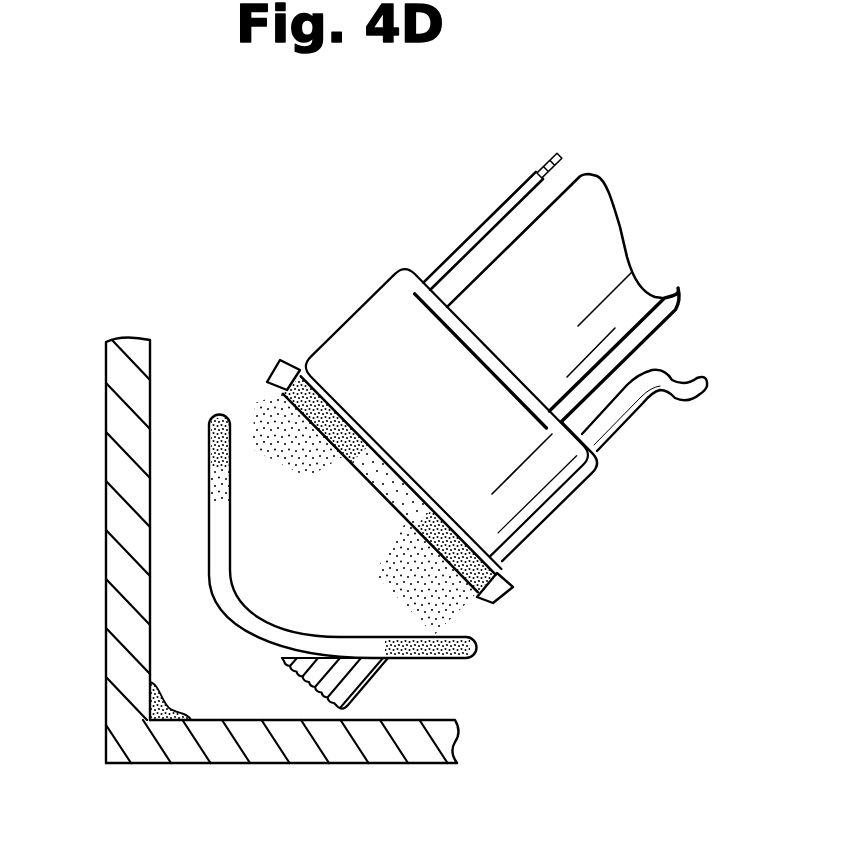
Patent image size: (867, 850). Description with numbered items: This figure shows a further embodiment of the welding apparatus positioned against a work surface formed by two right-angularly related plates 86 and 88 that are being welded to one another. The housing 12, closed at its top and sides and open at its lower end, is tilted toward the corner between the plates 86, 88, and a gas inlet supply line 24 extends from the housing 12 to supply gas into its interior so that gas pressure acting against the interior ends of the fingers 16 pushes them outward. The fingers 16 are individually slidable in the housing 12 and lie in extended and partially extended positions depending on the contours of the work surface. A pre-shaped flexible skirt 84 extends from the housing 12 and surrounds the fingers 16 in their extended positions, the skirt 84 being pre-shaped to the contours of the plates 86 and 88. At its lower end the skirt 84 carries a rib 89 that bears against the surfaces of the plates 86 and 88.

The housing 12 is at (517, 487).
The fingers 16 is at (362, 677).
The gas inlet supply line 24 is at (683, 397).
The pre-shaped flexible skirt 84 is at (287, 477).
The plate 86 is at (107, 607).
The plate 88 is at (227, 755).
The rib 89 is at (477, 646).